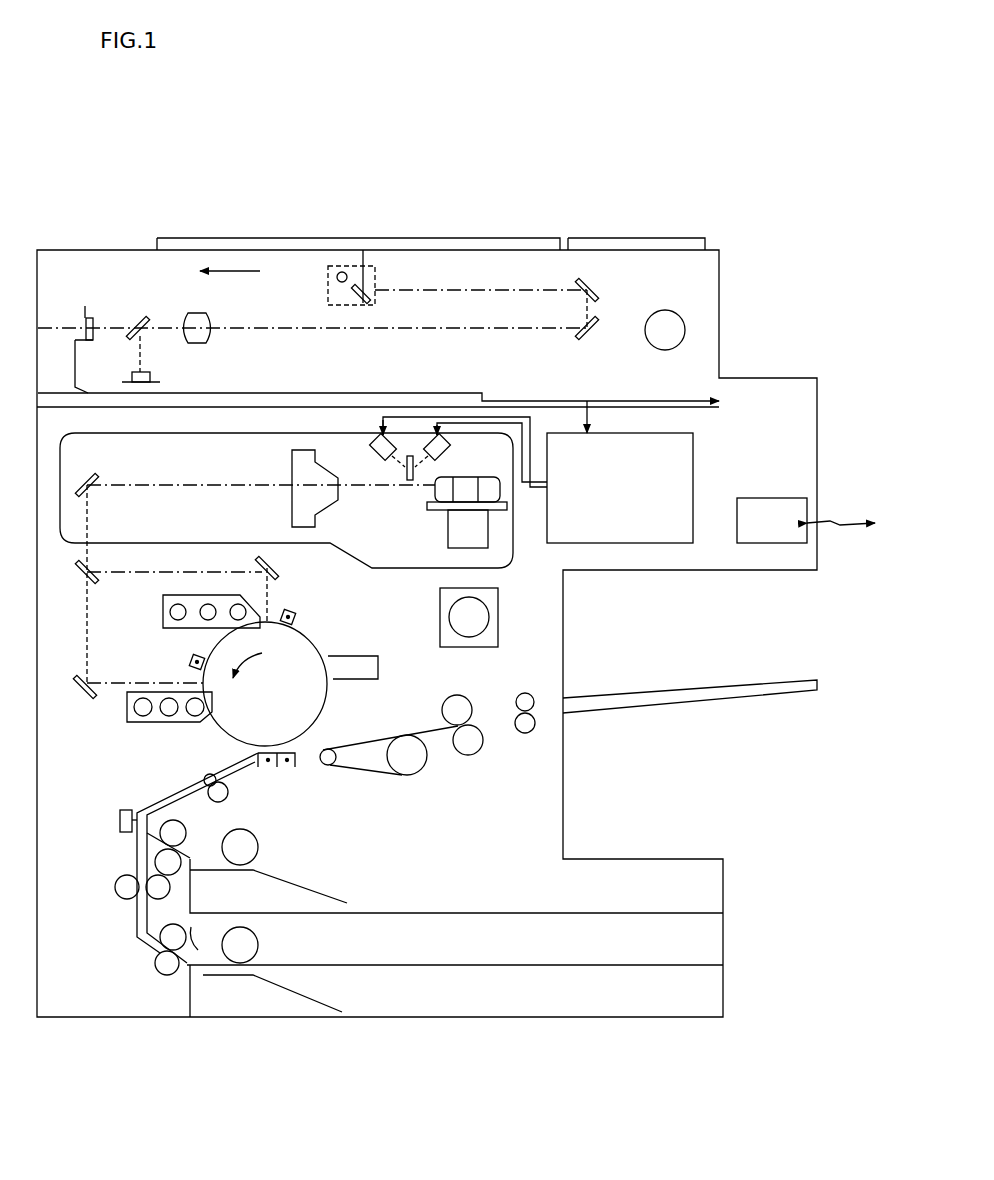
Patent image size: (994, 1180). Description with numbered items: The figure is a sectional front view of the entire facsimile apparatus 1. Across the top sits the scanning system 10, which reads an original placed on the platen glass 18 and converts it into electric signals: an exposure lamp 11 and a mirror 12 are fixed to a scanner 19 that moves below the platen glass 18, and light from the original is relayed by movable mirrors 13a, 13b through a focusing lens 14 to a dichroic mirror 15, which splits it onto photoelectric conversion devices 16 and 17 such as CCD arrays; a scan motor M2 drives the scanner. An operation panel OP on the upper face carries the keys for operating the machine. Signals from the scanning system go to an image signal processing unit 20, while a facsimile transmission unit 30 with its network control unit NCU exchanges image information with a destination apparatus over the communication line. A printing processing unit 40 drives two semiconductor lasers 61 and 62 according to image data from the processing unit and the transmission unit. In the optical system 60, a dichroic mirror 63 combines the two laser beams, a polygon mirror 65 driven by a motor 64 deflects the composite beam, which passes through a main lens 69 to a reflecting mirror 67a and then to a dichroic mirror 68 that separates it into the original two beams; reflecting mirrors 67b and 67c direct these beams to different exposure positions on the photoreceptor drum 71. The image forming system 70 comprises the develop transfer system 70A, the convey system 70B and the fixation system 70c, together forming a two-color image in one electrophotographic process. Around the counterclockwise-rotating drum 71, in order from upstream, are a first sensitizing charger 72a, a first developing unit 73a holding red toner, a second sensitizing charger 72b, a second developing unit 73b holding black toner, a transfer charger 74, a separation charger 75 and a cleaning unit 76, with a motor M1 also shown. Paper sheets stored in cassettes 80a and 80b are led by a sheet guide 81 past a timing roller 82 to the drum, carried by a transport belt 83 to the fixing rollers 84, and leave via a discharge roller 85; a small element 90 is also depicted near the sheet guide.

The facsimile apparatus 1 is at (229, 173).
The scanning system 10 is at (343, 319).
The exposure lamp 11 is at (330, 276).
The mirror 12 is at (376, 294).
The movable mirror 13a is at (600, 288).
The movable mirror 13b is at (595, 338).
The focusing lens 14 is at (210, 338).
The dichroic mirror 15 is at (142, 316).
The photoelectric conversion device 16 is at (88, 312).
The photoelectric conversion device 17 is at (152, 375).
The platen glass 18 is at (388, 250).
The scanner 19 is at (378, 271).
The image signal processing unit 20 is at (330, 393).
The operation panel OP is at (688, 238).
The scan motor M2 is at (665, 330).
The facsimile transmission unit 30 is at (755, 415).
The printing processing unit 40 is at (607, 495).
The network control unit NCU is at (806, 520).
The optical system 60 is at (182, 475).
The semiconductor laser 61 is at (452, 447).
The semiconductor laser 62 is at (372, 447).
The dichroic mirror 63 is at (410, 485).
The motor 64 is at (488, 540).
The polygon mirror 65 is at (465, 497).
The reflecting mirror 67a is at (90, 478).
The reflecting mirror 67b is at (80, 692).
The reflecting mirror 67c is at (278, 571).
The dichroic mirror 68 is at (80, 576).
The main lens 69 is at (290, 505).
The image forming system 70 is at (395, 608).
The develop transfer system 70A is at (96, 628).
The convey system 70B is at (353, 836).
The fixation system 70c is at (500, 776).
The photoreceptor drum 71 is at (265, 684).
The first sensitizing charger 72a is at (294, 612).
The second sensitizing charger 72b is at (190, 661).
The first developing unit 73a is at (165, 602).
The second developing unit 73b is at (150, 724).
The transfer charger 74 is at (265, 768).
The separation charger 75 is at (290, 768).
The cleaning unit 76 is at (378, 668).
The motor M1 is at (469, 617).
The cassette 80a is at (478, 870).
The cassette 80b is at (478, 975).
The sheet guide 81 is at (130, 857).
The timing roller 82 is at (215, 803).
The transport belt 83 is at (375, 740).
The fixing rollers 84 is at (465, 696).
The discharge roller 85 is at (529, 694).
The paper sensor 90 is at (98, 816).